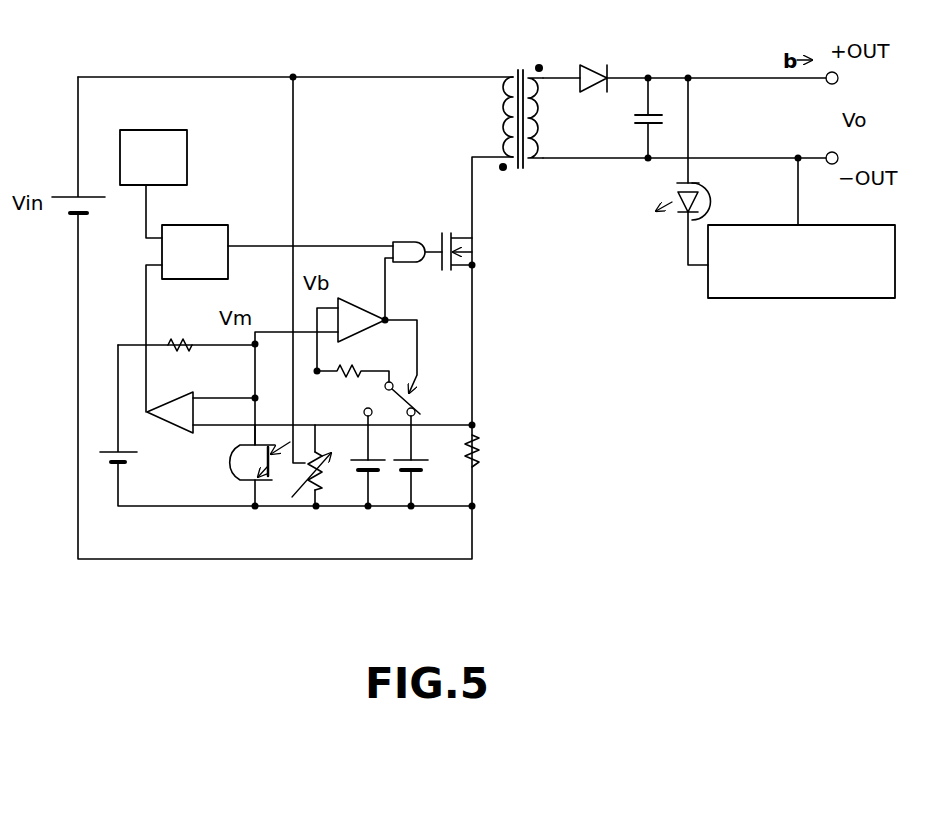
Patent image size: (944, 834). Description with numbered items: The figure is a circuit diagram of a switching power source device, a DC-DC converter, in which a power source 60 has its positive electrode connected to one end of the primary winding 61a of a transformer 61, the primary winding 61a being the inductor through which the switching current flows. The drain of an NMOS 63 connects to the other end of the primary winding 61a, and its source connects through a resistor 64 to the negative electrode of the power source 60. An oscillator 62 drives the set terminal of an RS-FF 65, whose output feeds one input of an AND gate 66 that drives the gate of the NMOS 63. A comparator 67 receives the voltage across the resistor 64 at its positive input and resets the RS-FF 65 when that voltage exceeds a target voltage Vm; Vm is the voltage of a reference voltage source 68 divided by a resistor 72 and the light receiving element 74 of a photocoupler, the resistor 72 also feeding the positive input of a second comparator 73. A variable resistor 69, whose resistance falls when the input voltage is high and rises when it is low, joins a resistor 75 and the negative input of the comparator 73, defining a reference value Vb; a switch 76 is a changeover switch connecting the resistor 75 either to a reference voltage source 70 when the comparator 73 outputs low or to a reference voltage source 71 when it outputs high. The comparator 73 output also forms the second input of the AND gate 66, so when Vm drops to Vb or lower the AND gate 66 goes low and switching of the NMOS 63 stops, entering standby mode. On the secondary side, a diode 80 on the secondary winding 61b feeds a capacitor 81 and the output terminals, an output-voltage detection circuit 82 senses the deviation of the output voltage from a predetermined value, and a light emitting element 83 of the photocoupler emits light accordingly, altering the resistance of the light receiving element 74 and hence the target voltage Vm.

The power source 60 is at (53, 196).
The transformer 61 is at (518, 70).
The primary winding 61a is at (500, 118).
The secondary winding 61b is at (545, 143).
The oscillator 62 is at (188, 140).
The NMOS 63 is at (443, 232).
The resistor 64 is at (490, 452).
The RS-FF 65 is at (228, 225).
The AND gate 66 is at (393, 241).
The comparator 67 is at (185, 435).
The reference voltage source 68 is at (101, 450).
The variable resistor 69 is at (303, 489).
The reference voltage source 70 is at (418, 464).
The reference voltage source 71 is at (352, 466).
The resistor 72 is at (176, 338).
The comparator 73 is at (347, 298).
The light receiving element 74 is at (238, 480).
The resistor 75 is at (358, 366).
The switch 76 is at (420, 398).
The diode 80 is at (590, 65).
The capacitor 81 is at (636, 126).
The output-voltage detection circuit 82 is at (808, 298).
The light emitting element 83 is at (683, 222).